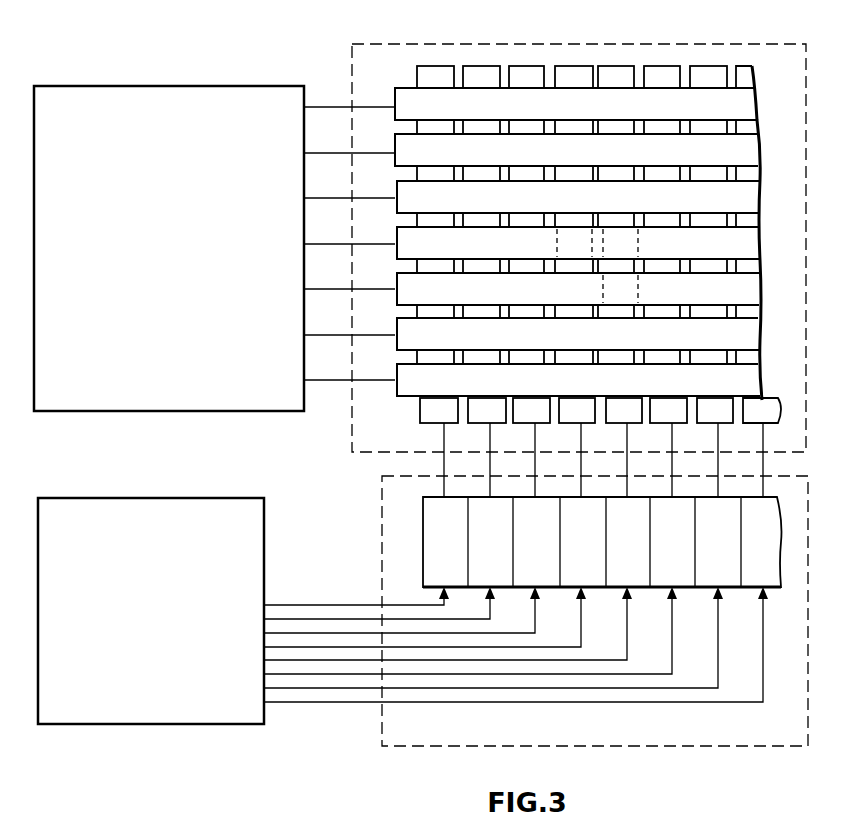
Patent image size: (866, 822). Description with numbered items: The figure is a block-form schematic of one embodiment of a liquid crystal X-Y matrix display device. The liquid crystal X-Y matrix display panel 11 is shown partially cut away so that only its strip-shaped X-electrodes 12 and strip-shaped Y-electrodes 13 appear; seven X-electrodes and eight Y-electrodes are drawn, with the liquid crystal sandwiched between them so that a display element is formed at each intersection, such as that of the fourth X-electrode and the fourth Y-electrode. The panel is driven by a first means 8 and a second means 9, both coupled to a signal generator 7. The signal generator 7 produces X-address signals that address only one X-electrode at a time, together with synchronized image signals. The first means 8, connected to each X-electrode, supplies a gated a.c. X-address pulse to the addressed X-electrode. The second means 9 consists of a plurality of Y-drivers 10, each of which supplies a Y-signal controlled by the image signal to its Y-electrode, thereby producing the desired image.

The signal generator 7 is at (142, 591).
The first means 8 is at (162, 221).
The second means 9 is at (388, 735).
The Y-drivers 10 is at (782, 520).
The liquid crystal X-Y matrix display panel 11 is at (800, 175).
The X-electrodes 12 is at (395, 120).
The Y-electrodes 13 is at (518, 70).